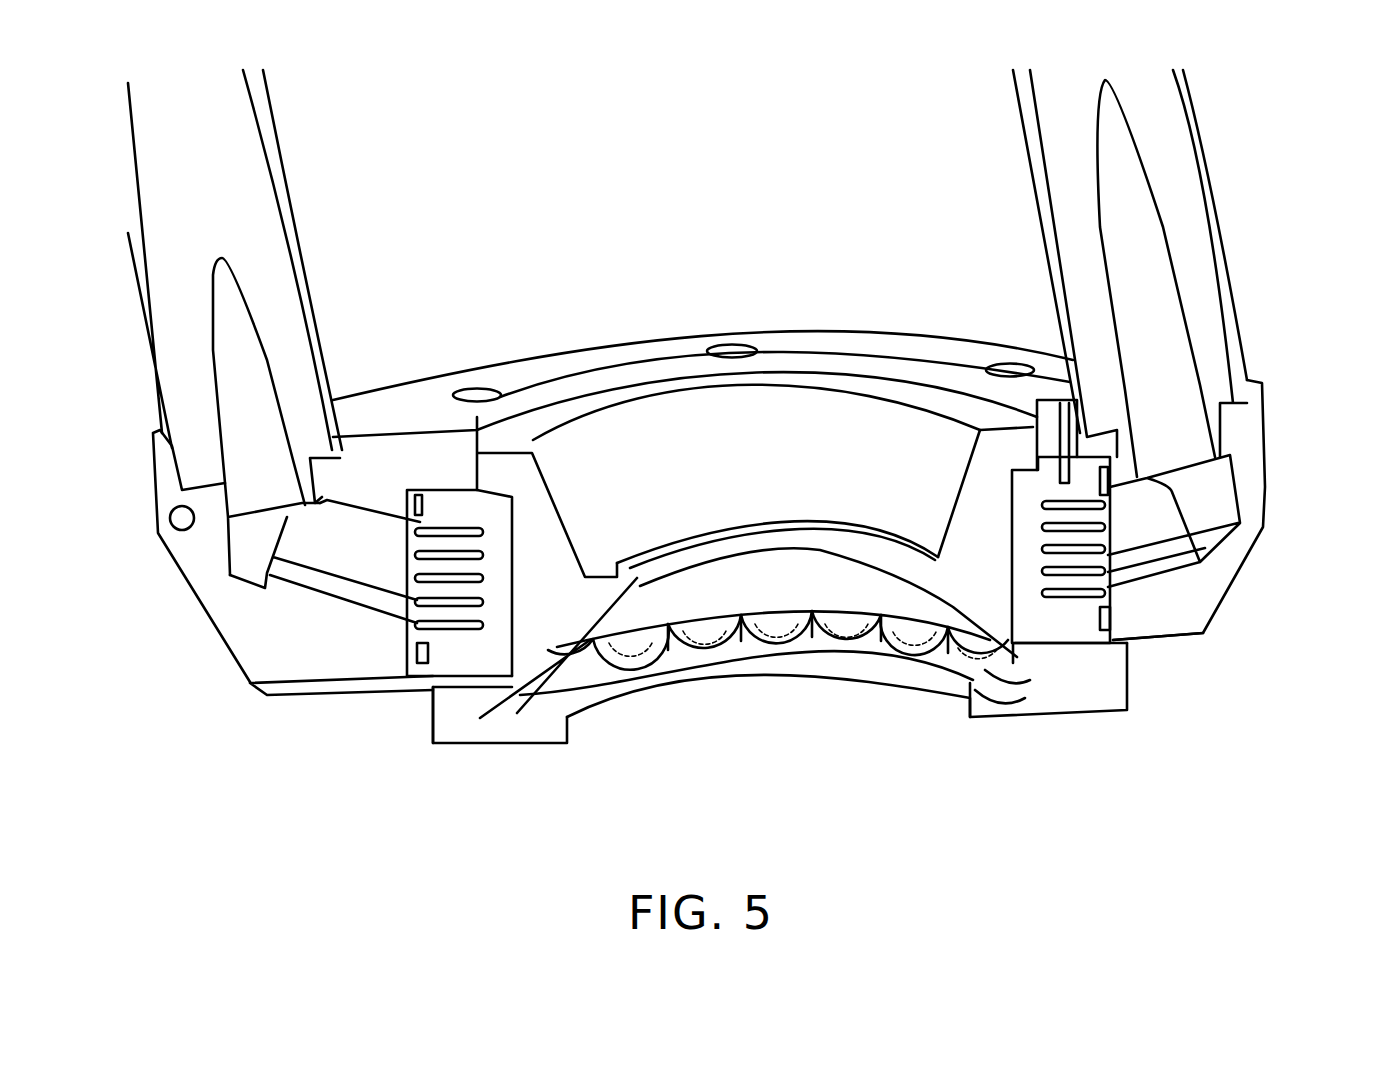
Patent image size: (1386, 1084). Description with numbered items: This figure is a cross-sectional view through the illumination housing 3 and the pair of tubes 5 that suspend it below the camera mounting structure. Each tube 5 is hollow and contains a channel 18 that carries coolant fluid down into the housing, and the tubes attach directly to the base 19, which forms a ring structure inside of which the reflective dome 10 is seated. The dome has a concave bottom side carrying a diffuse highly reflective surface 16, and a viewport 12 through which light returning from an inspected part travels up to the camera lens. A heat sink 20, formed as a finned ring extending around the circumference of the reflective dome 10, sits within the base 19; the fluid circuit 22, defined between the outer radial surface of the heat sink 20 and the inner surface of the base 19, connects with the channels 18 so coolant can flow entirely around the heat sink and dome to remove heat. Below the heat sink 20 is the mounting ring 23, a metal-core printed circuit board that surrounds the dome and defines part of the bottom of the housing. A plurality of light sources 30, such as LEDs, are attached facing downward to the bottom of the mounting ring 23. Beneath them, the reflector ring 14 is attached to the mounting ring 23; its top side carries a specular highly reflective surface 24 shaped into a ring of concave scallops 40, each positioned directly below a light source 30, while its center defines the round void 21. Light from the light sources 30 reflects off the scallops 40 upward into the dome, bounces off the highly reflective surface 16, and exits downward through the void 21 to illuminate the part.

The illumination housing 3 is at (1243, 623).
The pair of tubes 5 is at (267, 117).
The reflective dome 10 is at (538, 522).
The viewport 12 is at (703, 530).
The reflector ring 14 is at (553, 733).
The highly reflective surface 16 is at (800, 573).
The channel 18 is at (252, 368).
The base 19 is at (397, 460).
The heat sink 20 is at (452, 660).
The void 21 is at (781, 712).
The fluid circuit 22 is at (417, 587).
The mounting ring 23 is at (298, 695).
The highly reflective surface 24 is at (1008, 703).
The light sources 30 is at (475, 695).
The scallops 40 is at (588, 668).